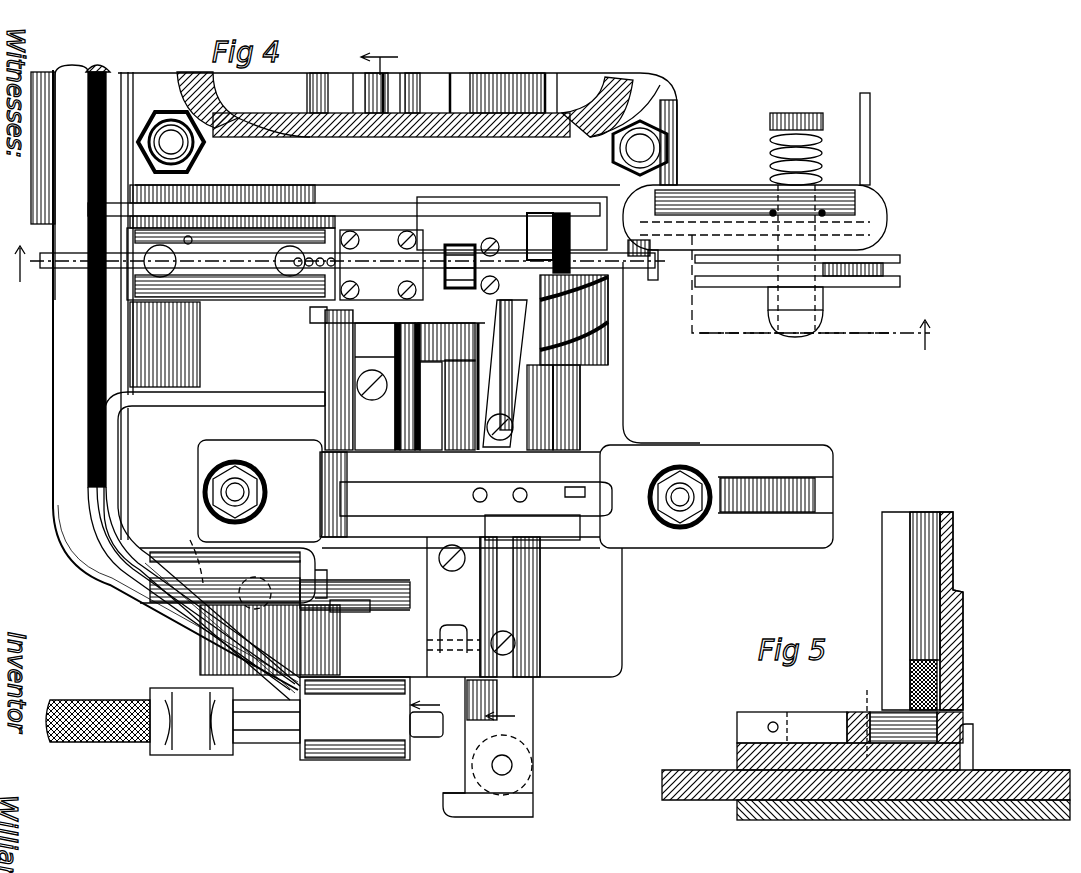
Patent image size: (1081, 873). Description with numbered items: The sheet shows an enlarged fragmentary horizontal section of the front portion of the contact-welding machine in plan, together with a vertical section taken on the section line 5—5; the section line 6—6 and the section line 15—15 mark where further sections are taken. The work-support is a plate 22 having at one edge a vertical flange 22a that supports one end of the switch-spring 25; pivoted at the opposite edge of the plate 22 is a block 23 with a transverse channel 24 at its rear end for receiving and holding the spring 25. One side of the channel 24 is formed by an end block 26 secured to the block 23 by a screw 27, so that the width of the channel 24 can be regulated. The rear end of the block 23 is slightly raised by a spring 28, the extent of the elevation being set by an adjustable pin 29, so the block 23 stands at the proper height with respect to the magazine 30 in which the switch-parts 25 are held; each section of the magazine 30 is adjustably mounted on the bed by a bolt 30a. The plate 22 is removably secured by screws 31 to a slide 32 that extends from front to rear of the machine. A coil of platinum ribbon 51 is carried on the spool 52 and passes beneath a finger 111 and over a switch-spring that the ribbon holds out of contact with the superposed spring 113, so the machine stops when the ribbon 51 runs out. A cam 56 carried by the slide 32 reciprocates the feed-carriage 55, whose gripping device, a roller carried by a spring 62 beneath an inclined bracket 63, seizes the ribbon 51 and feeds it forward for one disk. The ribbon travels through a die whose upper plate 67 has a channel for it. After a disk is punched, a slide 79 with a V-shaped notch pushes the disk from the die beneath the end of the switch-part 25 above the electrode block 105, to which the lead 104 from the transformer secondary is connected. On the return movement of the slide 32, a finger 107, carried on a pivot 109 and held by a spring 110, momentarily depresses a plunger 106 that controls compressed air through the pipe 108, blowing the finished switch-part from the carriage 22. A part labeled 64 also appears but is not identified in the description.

In FIG. 4, the section line 5— 5 is at (500, 726).
In FIG. 4, the section line 6— 6 is at (474, 298).
In FIG. 4, the section line 15— 15 is at (400, 371).
In FIG. 5, the plate 22 is at (740, 752).
In FIG. 4, the vertical flange 22a is at (520, 540).
In FIG. 4, the block 23 is at (417, 500).
In FIG. 5, the block 23 is at (808, 712).
In FIG. 5, the transverse channel 24 is at (905, 712).
In FIG. 4, the switch-spring 25 is at (450, 508).
In FIG. 5, the switch-spring 25 is at (940, 662).
In FIG. 5, the end block 26 is at (965, 712).
In FIG. 5, the screw 27 is at (966, 727).
In FIG. 5, the spring 28 is at (841, 727).
In FIG. 4, the adjustable pin 29 is at (438, 558).
In FIG. 5, the adjustable pin 29 is at (861, 718).
In FIG. 4, the magazine 30 is at (545, 465).
In FIG. 5, the magazine 30 is at (905, 530).
In FIG. 4, the bolt 30a is at (240, 478).
In FIG. 4, the screws 31 is at (516, 645).
In FIG. 4, the slide 32 is at (575, 415).
In FIG. 5, the slide 32 is at (1021, 762).
In FIG. 4, the platinum ribbon 51 is at (45, 270).
In FIG. 4, the spool 52 is at (885, 287).
In FIG. 4, the feed-carriage 55 is at (582, 240).
In FIG. 4, the cam 56 is at (515, 378).
In FIG. 4, the spring 62 is at (460, 243).
In FIG. 4, the inclined bracket 63 is at (505, 235).
In FIG. 4, the plate 64 is at (258, 262).
In FIG. 4, the upper plate 67 is at (327, 322).
In FIG. 4, the slide 79 is at (358, 194).
In FIG. 4, the lead 104 is at (53, 460).
In FIG. 4, the electrode block 105 is at (363, 614).
In FIG. 4, the plunger 106 is at (430, 740).
In FIG. 4, the finger 107 is at (535, 800).
In FIG. 4, the pipe 108 is at (195, 620).
In FIG. 4, the pivot 109 is at (512, 765).
In FIG. 4, the spring 110 is at (535, 745).
In FIG. 4, the finger 111 is at (658, 282).
In FIG. 4, the superposed spring 113 is at (627, 243).